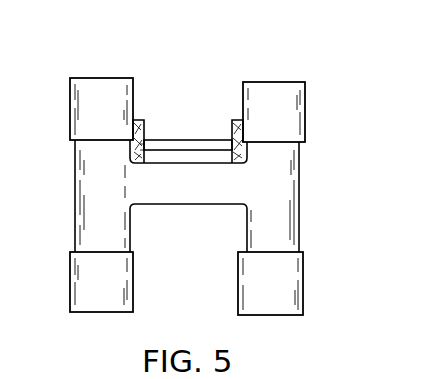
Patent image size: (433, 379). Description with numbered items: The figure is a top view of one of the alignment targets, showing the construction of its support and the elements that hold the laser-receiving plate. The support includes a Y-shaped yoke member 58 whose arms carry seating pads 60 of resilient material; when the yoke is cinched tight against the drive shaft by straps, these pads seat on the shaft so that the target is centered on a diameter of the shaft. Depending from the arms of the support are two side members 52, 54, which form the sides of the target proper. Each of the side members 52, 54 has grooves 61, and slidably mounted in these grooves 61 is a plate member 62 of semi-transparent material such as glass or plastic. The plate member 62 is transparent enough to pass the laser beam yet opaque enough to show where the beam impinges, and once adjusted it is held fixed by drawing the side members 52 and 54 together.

The side member 52 is at (142, 120).
The side member 54 is at (232, 120).
The Y-shaped yoke member 58 is at (166, 190).
The seating pads 60 is at (285, 97).
The grooves 61 is at (130, 147).
The plate member 62 is at (171, 139).